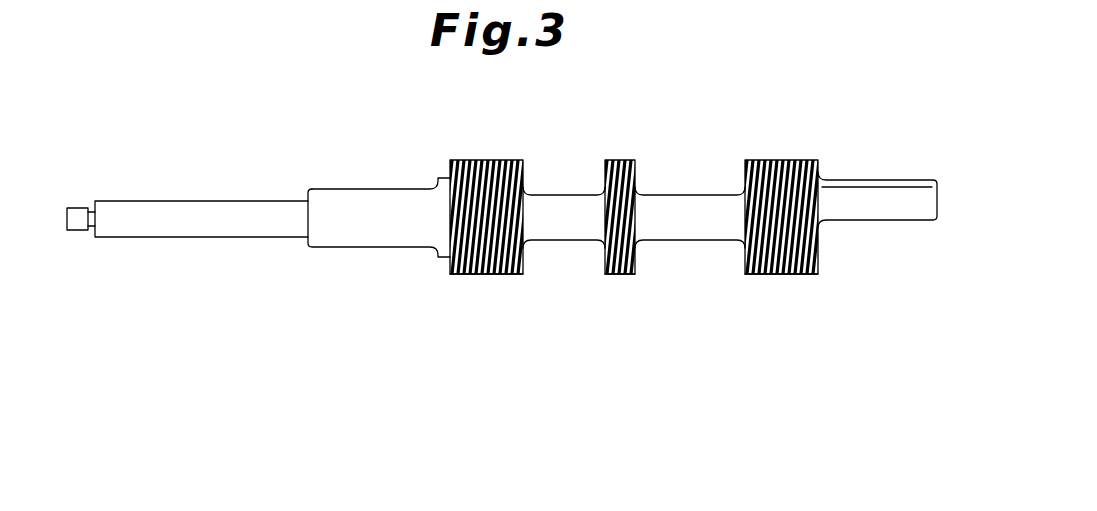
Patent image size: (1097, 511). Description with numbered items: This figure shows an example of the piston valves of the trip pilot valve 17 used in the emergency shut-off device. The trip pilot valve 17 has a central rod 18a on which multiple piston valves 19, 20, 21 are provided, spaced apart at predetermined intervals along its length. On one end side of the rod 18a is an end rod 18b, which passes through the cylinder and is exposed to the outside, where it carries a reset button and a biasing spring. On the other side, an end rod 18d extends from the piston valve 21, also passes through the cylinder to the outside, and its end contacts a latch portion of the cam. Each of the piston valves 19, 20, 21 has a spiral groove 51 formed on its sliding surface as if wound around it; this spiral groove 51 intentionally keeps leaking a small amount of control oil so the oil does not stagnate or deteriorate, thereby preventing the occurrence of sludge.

The trip pilot valve 17 is at (168, 172).
The rod 18a is at (565, 222).
The end rod 18b is at (195, 222).
The end rod 18d is at (878, 205).
The piston valve 19 is at (523, 170).
The piston valve 20 is at (635, 170).
The piston valve 21 is at (818, 170).
The spiral groove 51 is at (478, 274).